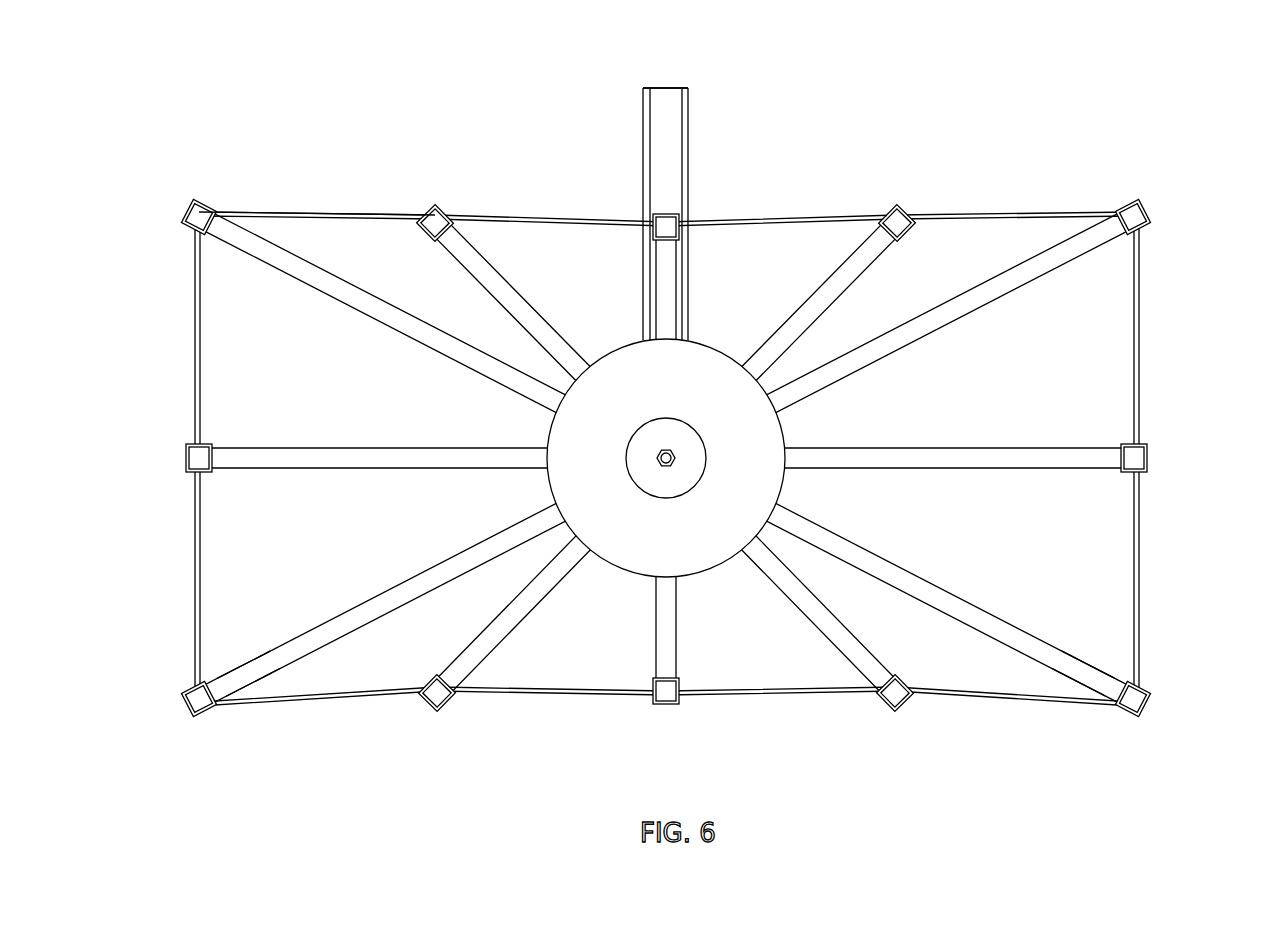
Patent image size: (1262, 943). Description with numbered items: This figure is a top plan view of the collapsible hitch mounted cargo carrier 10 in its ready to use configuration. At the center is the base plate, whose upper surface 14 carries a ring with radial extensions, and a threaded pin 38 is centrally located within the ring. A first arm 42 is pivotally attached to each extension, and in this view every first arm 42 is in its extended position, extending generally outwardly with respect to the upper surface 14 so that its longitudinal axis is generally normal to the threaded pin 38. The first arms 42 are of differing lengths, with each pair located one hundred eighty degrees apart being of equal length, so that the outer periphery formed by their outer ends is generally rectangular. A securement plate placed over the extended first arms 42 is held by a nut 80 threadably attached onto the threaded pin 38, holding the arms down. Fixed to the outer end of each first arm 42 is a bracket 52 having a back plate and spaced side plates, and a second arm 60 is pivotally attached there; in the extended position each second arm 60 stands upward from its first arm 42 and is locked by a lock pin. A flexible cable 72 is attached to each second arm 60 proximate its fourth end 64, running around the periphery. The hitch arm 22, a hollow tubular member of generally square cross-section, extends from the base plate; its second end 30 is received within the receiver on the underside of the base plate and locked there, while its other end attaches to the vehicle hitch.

The collapsible hitch mounted cargo carrier 10 is at (172, 123).
The upper surface 14 is at (778, 437).
The hitch arm 22 is at (694, 158).
The second end 30 is at (663, 88).
The threaded pin 38 is at (666, 470).
The first arm 42 is at (353, 441).
The bracket 52 is at (179, 205).
The second arm 60 is at (222, 688).
The fourth end 64 is at (1137, 698).
The flexible cable 72 is at (1141, 362).
The nut 80 is at (672, 463).